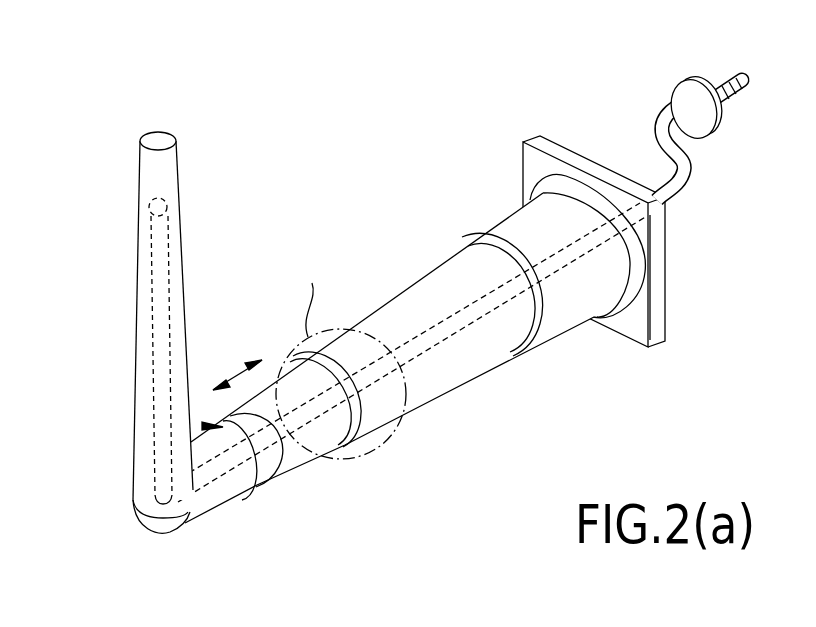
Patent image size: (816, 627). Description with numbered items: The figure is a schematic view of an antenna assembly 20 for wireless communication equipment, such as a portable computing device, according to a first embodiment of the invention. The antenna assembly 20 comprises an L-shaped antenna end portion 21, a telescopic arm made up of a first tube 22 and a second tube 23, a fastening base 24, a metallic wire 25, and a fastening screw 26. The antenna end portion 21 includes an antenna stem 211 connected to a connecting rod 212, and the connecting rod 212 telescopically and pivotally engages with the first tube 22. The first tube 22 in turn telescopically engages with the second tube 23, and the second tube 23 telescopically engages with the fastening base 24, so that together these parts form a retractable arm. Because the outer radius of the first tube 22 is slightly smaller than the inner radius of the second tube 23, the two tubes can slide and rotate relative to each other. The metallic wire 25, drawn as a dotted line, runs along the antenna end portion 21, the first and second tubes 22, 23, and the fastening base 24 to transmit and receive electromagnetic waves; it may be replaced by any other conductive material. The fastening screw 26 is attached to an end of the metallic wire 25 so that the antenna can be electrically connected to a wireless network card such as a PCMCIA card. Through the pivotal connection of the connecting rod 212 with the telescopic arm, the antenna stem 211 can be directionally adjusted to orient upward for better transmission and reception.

The antenna assembly 20 is at (387, 314).
The L-shaped antenna end portion 21 is at (114, 362).
The antenna stem 211 is at (147, 424).
The connecting rod 212 is at (211, 493).
The first telescopic tube 22 is at (251, 471).
The second telescopic tube 23 is at (409, 347).
The fastening base 24 is at (594, 260).
The metallic wire 25 is at (690, 173).
The fastening screw 26 is at (680, 88).